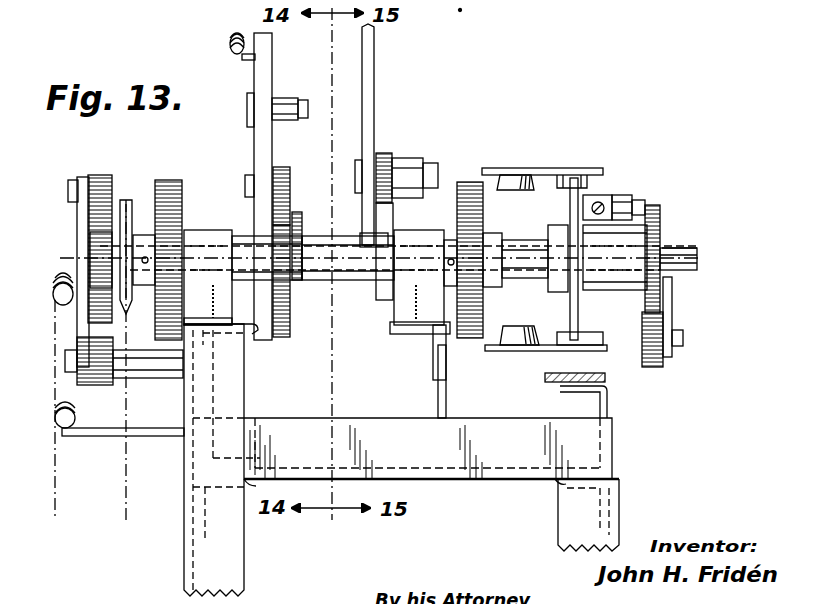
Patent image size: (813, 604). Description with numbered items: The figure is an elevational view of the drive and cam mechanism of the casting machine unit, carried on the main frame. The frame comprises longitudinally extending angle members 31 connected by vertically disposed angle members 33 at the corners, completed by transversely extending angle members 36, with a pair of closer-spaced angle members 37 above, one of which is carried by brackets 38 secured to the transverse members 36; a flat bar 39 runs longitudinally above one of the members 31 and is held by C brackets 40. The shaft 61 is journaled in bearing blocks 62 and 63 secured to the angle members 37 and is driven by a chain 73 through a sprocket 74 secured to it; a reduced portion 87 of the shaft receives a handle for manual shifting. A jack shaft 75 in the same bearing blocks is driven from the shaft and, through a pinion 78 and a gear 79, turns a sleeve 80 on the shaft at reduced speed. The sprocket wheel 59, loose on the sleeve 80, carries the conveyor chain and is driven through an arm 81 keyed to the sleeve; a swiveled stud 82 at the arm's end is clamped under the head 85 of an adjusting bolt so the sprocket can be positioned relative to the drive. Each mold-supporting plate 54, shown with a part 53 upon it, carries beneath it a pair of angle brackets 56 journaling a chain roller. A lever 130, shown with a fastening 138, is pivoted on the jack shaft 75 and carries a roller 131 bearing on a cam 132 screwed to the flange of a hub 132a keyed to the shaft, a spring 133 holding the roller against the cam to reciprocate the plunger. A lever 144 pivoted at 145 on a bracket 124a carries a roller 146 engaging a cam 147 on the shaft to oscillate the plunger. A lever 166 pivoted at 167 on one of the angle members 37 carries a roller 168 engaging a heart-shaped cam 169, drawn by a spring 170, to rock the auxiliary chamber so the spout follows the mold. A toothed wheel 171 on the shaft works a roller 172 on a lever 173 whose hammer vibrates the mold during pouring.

The longitudinally extending angle members 31 is at (250, 488).
The vertically disposed angle members 33 is at (203, 557).
The transversely extending angle members 36 is at (464, 481).
The angle members 37 is at (256, 330).
The brackets 38 is at (447, 401).
The flat bar 39 is at (606, 378).
The C brackets 40 is at (608, 407).
The cam follower block 53 is at (522, 184).
The plate 54 is at (514, 165).
The angle brackets 56 is at (588, 172).
The sprocket wheel 59 is at (579, 308).
The shaft 61 is at (698, 259).
The bearing block 62 is at (210, 226).
The bearing block 63 is at (400, 300).
The chain 73 is at (126, 497).
The sprocket 74 is at (129, 207).
The jack shaft 75 is at (344, 270).
The pinion 78 is at (490, 252).
The gear 79 is at (470, 183).
The sleeve 80 is at (536, 272).
The arm 81 is at (628, 199).
The swiveled stud 82 is at (645, 206).
The head 85 is at (602, 200).
The reduced portion 87 is at (686, 252).
The bracket 124a is at (409, 157).
The lever 130 is at (265, 76).
The roller 131 is at (288, 170).
The cam 132 is at (283, 337).
The hub 132a is at (303, 222).
The spring 133 is at (231, 40).
The bolt 138 is at (307, 113).
The lever 144 is at (371, 74).
The pivot 145 is at (356, 183).
The roller 146 is at (372, 298).
The cam 147 is at (372, 243).
The lever 166 is at (78, 213).
The pivot 167 is at (66, 360).
The roller 168 is at (111, 178).
The heart-shaped cam 169 is at (100, 243).
The spring 170 is at (53, 293).
The toothed wheel 171 is at (661, 222).
The roller 172 is at (656, 342).
The lever 173 is at (673, 300).